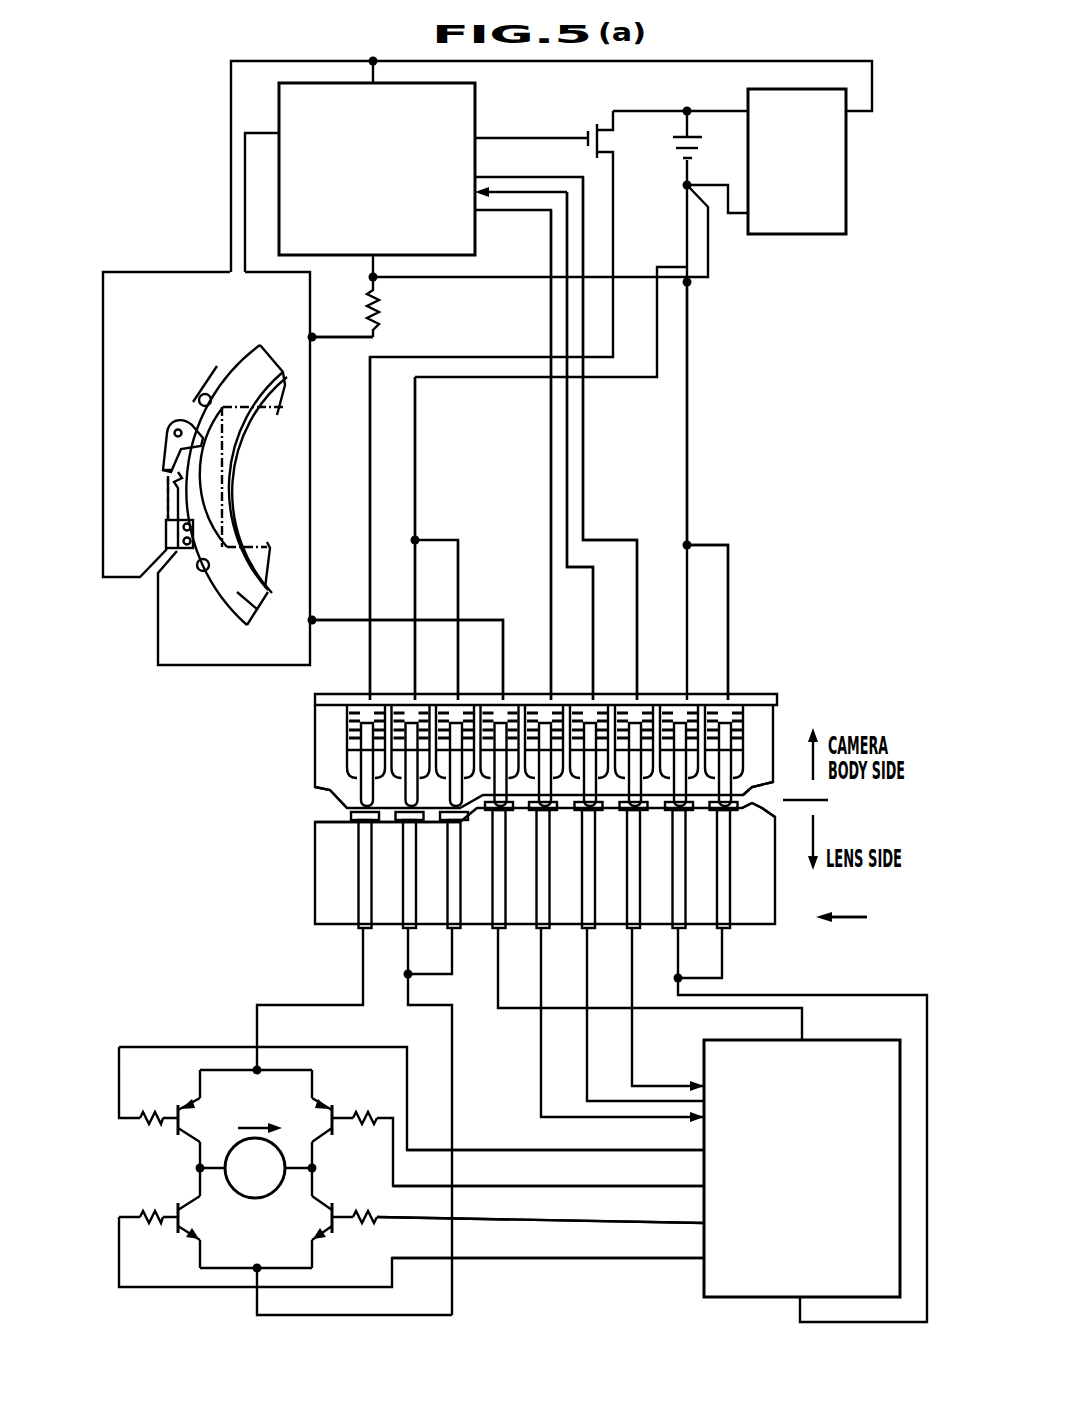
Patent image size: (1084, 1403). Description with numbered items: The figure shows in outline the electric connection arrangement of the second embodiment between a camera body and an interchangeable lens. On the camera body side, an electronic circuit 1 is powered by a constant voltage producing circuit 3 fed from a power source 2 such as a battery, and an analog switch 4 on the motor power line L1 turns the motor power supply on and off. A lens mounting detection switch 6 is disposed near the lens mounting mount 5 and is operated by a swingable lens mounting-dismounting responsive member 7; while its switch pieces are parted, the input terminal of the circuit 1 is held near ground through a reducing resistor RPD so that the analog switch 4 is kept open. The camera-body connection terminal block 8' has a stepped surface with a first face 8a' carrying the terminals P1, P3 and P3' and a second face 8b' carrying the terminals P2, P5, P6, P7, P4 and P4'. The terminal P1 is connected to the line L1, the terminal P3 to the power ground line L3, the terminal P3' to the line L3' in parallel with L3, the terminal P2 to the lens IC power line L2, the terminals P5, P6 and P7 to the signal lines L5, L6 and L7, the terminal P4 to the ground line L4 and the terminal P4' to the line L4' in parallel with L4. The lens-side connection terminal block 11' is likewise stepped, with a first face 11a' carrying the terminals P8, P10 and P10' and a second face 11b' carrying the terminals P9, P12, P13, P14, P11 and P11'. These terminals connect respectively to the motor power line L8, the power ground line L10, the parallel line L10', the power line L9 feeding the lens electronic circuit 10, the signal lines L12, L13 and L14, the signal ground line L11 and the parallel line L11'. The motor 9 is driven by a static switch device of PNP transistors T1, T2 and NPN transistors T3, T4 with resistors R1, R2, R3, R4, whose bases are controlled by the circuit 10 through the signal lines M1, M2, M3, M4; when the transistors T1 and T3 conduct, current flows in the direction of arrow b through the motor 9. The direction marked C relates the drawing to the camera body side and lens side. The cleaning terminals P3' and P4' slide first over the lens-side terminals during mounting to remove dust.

The electronic circuit 1 is at (398, 165).
The power source 2 is at (705, 148).
The constant voltage producing circuit 3 is at (797, 188).
The analog switch 4 is at (510, 405).
The lens mounting mount 5 is at (236, 477).
The lens mounting detection switch 6 is at (157, 510).
The lens mounting-dismounting responsive member 7 is at (164, 445).
The reducing resistor RPD is at (404, 307).
The motor power line L1 is at (352, 528).
The lens IC power line L2 is at (411, 642).
The power ground line L3 is at (395, 538).
The parallel power ground line L3' is at (439, 620).
The signal ground line L4 is at (704, 491).
The parallel ground line L4' is at (727, 622).
The signal line L5 is at (565, 455).
The signal line L6 is at (598, 446).
The signal line L7 is at (629, 438).
The connection terminal P1 is at (365, 725).
The connection terminal P2 is at (498, 725).
The connection terminal P3 is at (407, 725).
The connection terminal P3' is at (450, 725).
The connection terminal P4 is at (677, 725).
The connection terminal P4' is at (718, 725).
The connection terminal P5 is at (542, 725).
The connection terminal P6 is at (588, 725).
The connection terminal P7 is at (632, 725).
The connection terminal block 8' is at (546, 725).
The first face 8a' is at (308, 785).
The second face 8b' is at (773, 767).
The connection terminal block 11' is at (559, 863).
The first face 11a' is at (362, 830).
The second face 11b' is at (774, 830).
The connection terminal P8 is at (360, 889).
The connection terminal P9 is at (494, 884).
The connection terminal P10 is at (402, 889).
The connection terminal P10' is at (443, 889).
The connection terminal P11 is at (670, 884).
The connection terminal P11' is at (711, 884).
The connection terminal P12 is at (534, 884).
The connection terminal P13 is at (580, 884).
The connection terminal P14 is at (625, 884).
The motor power line L8 is at (310, 999).
The power line L9 is at (650, 998).
The power ground line L10 is at (418, 1121).
The parallel power ground line L10' is at (449, 972).
The signal ground line L11 is at (802, 1125).
The parallel signal ground line L11' is at (728, 953).
The signal line L12 is at (622, 1025).
The signal line L13 is at (645, 1014).
The signal line L14 is at (668, 1009).
The direction C is at (849, 920).
The PNP transistor T1 is at (176, 1102).
The PNP transistor T2 is at (340, 1104).
The NPN transistor T3 is at (339, 1238).
The NPN transistor T4 is at (175, 1232).
The resistor R1 is at (162, 1145).
The resistor R2 is at (370, 1146).
The resistor R3 is at (356, 1195).
The resistor R4 is at (137, 1192).
The motor 9 is at (259, 1196).
The arrow b is at (260, 1112).
The signal line M1 is at (555, 1153).
The signal line M2 is at (548, 1188).
The signal line M3 is at (540, 1225).
The signal line M4 is at (548, 1261).
The electronic circuit 10 is at (782, 1180).